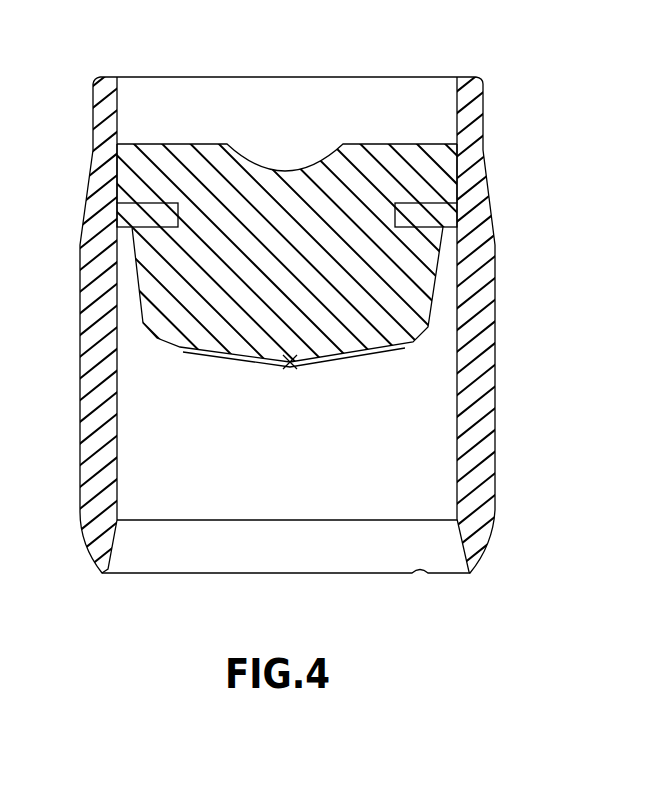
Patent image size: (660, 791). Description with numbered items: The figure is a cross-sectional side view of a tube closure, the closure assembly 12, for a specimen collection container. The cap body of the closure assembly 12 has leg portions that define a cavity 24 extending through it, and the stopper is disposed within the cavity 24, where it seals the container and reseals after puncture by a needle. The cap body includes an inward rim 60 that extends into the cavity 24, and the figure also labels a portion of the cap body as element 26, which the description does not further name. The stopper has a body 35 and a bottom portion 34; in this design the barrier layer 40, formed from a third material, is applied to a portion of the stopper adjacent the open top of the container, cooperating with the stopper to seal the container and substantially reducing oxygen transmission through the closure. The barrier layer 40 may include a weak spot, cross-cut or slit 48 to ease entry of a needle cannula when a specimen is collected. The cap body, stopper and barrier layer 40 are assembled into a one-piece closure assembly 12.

The closure assembly 12 is at (582, 192).
The cavity 24 is at (275, 106).
The side wall 26 is at (105, 107).
The inward rim 60 is at (150, 216).
The body 35 is at (400, 285).
The bottom portion 34 is at (207, 347).
The barrier layer 40 is at (228, 353).
The slit 48 is at (290, 366).